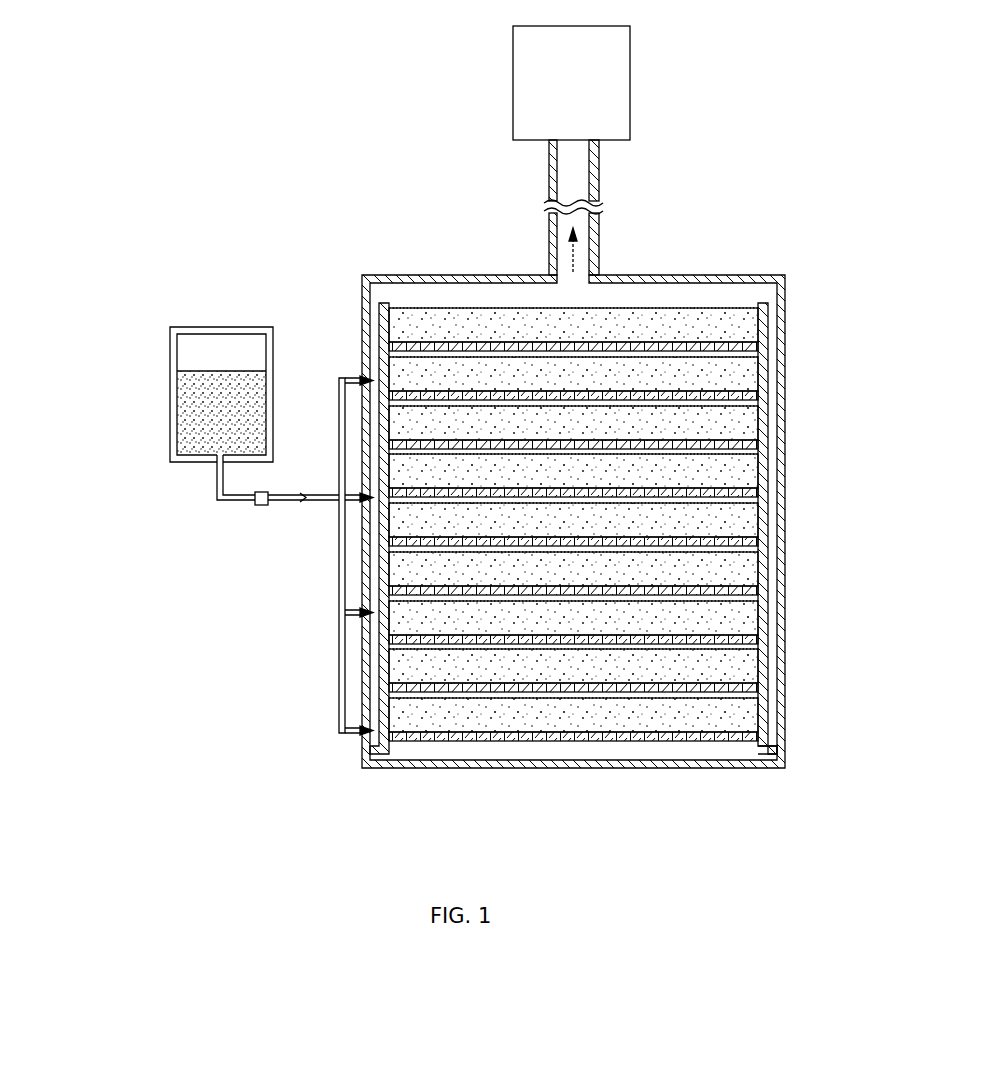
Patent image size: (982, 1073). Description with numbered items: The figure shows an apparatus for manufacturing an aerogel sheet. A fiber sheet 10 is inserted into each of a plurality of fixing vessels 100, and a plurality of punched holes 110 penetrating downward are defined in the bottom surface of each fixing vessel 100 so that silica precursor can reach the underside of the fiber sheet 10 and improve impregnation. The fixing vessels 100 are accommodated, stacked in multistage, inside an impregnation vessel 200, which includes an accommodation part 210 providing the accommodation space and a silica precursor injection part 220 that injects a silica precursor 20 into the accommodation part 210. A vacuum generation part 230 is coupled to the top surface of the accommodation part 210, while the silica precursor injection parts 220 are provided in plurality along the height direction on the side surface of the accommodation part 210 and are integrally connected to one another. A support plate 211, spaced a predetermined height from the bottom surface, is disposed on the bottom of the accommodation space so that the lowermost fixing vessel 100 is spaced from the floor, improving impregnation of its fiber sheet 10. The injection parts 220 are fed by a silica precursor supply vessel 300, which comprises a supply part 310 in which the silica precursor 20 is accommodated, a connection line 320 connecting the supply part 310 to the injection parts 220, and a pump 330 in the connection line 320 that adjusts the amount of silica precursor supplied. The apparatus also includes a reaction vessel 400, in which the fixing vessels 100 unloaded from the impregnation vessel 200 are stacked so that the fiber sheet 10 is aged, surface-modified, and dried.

The fiber sheet 10 is at (755, 716).
The silica precursor 20 is at (263, 401).
The fixing vessel 100 is at (771, 652).
The punched holes 110 is at (438, 742).
The impregnation vessel 200 is at (405, 78).
The accommodation part 210 is at (396, 274).
The support plate 211 is at (766, 756).
The silica precursor injection part 220 is at (340, 378).
The vacuum generation part 230 is at (513, 83).
The silica precursor supply vessel 300 is at (122, 512).
The supply part 310 is at (222, 327).
The connection line 320 is at (235, 512).
The pump 330 is at (262, 506).
The reaction vessel 400 is at (790, 864).